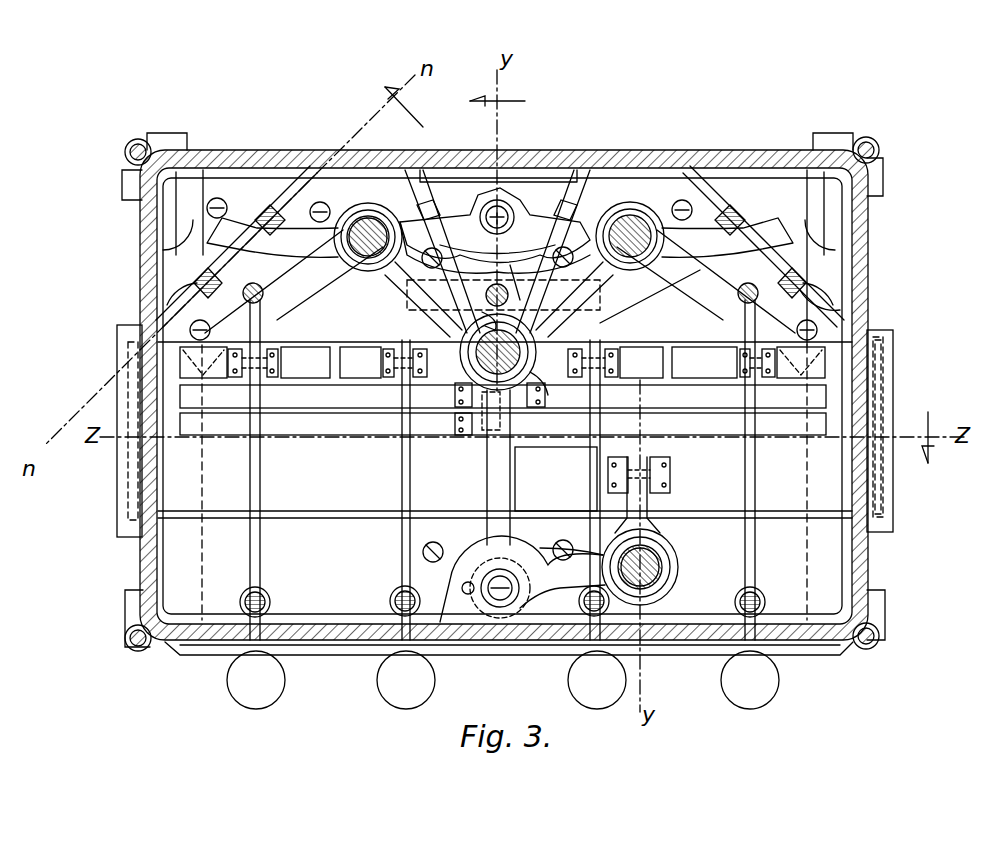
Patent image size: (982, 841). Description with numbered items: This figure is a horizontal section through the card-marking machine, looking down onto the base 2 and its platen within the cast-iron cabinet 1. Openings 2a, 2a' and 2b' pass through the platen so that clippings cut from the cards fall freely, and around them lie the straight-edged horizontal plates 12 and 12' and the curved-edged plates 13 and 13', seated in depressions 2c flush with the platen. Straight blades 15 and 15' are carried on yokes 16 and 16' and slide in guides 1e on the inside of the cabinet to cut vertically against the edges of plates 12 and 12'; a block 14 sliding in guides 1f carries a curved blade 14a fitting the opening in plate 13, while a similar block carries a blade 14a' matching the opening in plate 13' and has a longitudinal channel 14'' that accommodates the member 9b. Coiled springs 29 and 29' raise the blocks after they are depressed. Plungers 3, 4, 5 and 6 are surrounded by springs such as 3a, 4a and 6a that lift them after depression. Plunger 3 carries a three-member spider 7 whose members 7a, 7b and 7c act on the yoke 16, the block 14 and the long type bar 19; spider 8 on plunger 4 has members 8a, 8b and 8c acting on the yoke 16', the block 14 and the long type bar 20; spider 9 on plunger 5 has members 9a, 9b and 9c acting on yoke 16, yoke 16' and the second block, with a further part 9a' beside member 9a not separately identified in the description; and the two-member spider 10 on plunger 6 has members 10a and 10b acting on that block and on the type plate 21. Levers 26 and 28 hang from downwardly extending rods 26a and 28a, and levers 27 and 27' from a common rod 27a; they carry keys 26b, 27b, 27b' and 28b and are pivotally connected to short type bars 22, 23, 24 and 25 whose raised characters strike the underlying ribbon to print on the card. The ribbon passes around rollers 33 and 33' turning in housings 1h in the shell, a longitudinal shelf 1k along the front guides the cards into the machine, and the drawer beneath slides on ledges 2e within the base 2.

The cabinet 1 is at (862, 248).
The guides 1e is at (322, 170).
The guides 1f is at (430, 195).
The housings 1h is at (125, 340).
The longitudinal shelf 1k is at (667, 647).
The base 2 is at (823, 567).
The opening 2a is at (466, 230).
The opening 2a' is at (870, 231).
The opening 2b' is at (497, 223).
The depressions 2c is at (300, 305).
The ledges 2e is at (195, 185).
The plunger 3 is at (360, 268).
The spring 3a is at (380, 252).
The plunger 4 is at (626, 258).
The spring 4a is at (705, 252).
The plunger 5 is at (470, 378).
The plunger 6 is at (655, 555).
The spring 6a is at (655, 580).
The three-member spider 7 is at (302, 240).
The member 7a is at (287, 253).
The member 7b is at (470, 240).
The member 7c is at (470, 300).
The three-member spider 8 is at (690, 290).
The member 8a is at (715, 230).
The member 8b is at (528, 240).
The member 8c is at (560, 310).
The three-member spider 9 is at (535, 372).
The member 9a is at (423, 302).
The link 9a' is at (364, 333).
The member 9b is at (500, 495).
The member 9c is at (620, 325).
The two-member spider 10 is at (675, 570).
The member 10a is at (562, 587).
The member 10b is at (648, 505).
The horizontal plate 12 is at (228, 313).
The horizontal plate 12' is at (860, 292).
The plate 13 is at (646, 134).
The plate 13' is at (380, 569).
The block 14 is at (498, 150).
The curved blade 14a is at (532, 287).
The blade 14a' is at (456, 631).
The longitudinal channel 14'' is at (513, 552).
The straight blade 15 is at (190, 272).
The straight blade 15' is at (809, 265).
The yoke 16 is at (251, 203).
The yoke 16' is at (748, 202).
The long type bar 19 is at (530, 545).
The long type bar 20 is at (503, 396).
The type plate 21 is at (502, 420).
The short type bar 22 is at (279, 362).
The short type bar 23 is at (383, 362).
The short type bar 24 is at (615, 362).
The short type bar 25 is at (723, 362).
The lever 26 is at (258, 492).
The downwardly extending rod 26a is at (245, 296).
The key 26b is at (267, 700).
The lever 27 is at (421, 490).
The lever 27' is at (562, 490).
The downwardly extending rod 27a is at (509, 321).
The key 27b is at (419, 689).
The key 27b' is at (577, 689).
The lever 28 is at (755, 490).
The downwardly extending rod 28a is at (752, 297).
The key 28b is at (758, 700).
The coiled spring 29 is at (483, 178).
The coiled spring 29' is at (500, 624).
The roller 33 is at (476, 428).
The roller 33' is at (911, 427).